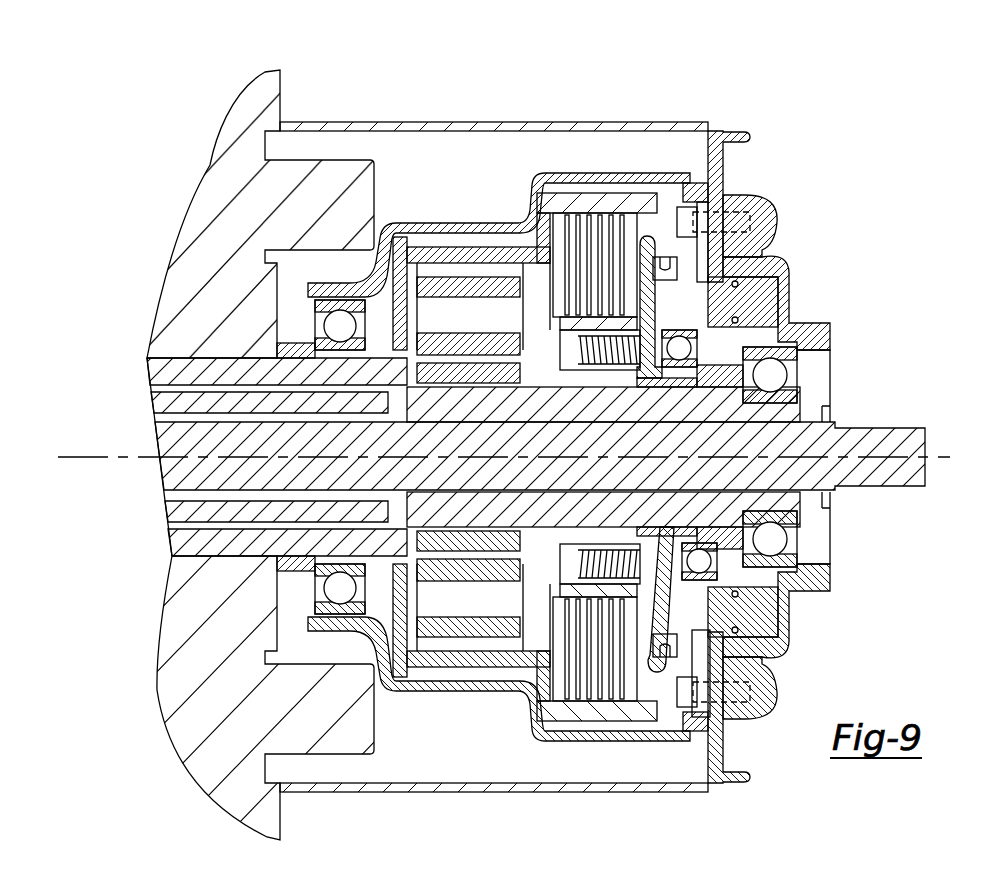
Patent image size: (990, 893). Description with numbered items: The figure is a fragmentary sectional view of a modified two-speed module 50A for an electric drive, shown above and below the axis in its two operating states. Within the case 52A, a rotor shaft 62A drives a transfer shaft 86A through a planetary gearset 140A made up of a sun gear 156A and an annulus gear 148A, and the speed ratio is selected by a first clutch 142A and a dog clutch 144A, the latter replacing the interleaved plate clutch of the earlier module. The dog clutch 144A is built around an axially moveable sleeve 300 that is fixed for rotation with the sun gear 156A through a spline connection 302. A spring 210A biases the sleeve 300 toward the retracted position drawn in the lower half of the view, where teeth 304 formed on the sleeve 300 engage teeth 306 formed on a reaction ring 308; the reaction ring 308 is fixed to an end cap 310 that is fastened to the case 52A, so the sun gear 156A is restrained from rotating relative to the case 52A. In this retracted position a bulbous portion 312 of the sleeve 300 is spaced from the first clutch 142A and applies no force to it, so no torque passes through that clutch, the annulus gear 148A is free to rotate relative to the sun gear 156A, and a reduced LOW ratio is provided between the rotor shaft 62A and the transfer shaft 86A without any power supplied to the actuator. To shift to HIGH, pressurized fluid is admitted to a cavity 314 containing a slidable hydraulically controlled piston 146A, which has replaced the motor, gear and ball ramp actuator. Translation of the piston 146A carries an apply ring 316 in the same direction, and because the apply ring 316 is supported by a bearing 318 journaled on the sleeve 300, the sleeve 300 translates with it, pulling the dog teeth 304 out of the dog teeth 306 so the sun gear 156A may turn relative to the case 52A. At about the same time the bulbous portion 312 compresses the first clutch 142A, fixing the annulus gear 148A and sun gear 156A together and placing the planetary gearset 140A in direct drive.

The two-speed module 50A is at (762, 91).
The case 52A is at (400, 122).
The rotor shaft 62A is at (303, 382).
The transfer shaft 86A is at (203, 408).
The planetary gearset 140A is at (483, 233).
The first clutch 142A is at (567, 198).
The dog clutch 144A is at (690, 192).
The piston 146A is at (747, 295).
The annulus gear 148A is at (447, 253).
The sun gear 156A is at (502, 410).
The spring 210A is at (600, 370).
The sleeve 300 is at (630, 228).
The spline connection 302 is at (658, 387).
The teeth 304 is at (668, 257).
The teeth 306 is at (713, 258).
The reaction ring 308 is at (723, 195).
The end cap 310 is at (734, 131).
The bulbous portion 312 is at (660, 673).
The cavity 314 is at (690, 350).
The apply ring 316 is at (768, 258).
The bearing 318 is at (690, 362).